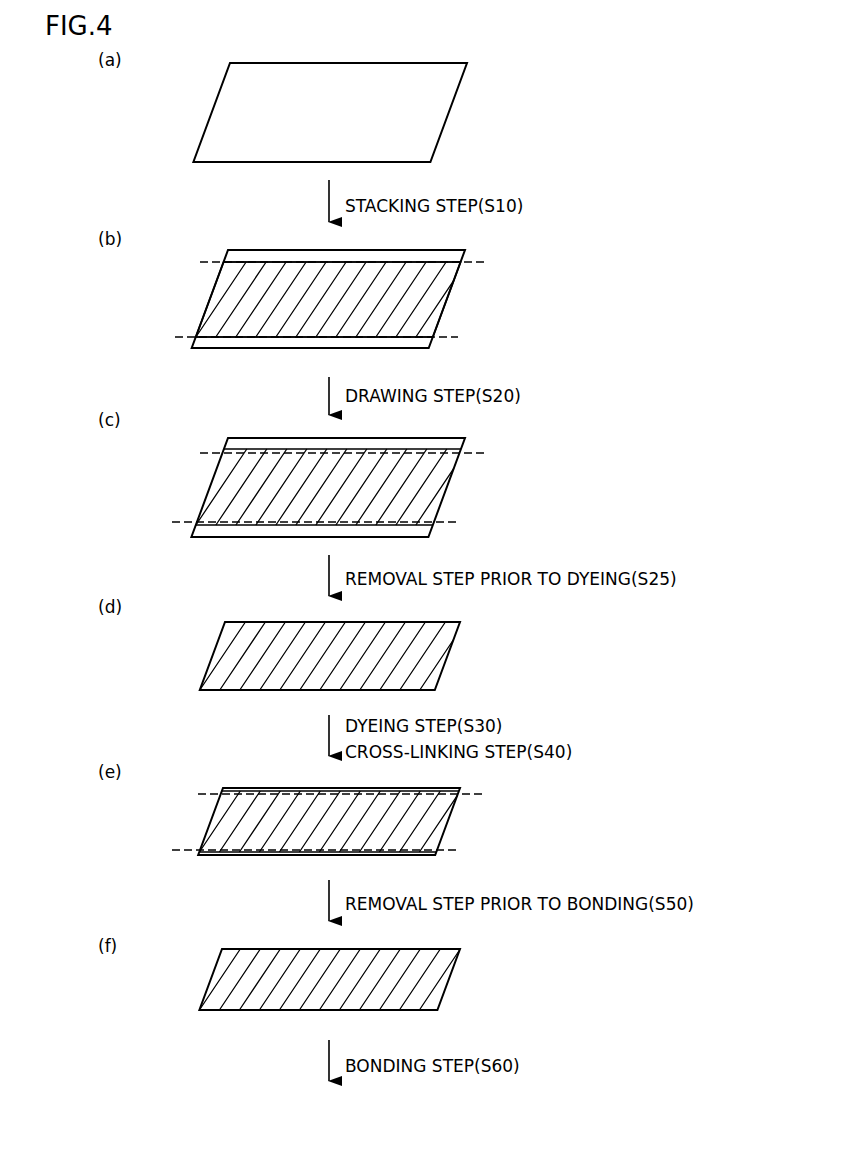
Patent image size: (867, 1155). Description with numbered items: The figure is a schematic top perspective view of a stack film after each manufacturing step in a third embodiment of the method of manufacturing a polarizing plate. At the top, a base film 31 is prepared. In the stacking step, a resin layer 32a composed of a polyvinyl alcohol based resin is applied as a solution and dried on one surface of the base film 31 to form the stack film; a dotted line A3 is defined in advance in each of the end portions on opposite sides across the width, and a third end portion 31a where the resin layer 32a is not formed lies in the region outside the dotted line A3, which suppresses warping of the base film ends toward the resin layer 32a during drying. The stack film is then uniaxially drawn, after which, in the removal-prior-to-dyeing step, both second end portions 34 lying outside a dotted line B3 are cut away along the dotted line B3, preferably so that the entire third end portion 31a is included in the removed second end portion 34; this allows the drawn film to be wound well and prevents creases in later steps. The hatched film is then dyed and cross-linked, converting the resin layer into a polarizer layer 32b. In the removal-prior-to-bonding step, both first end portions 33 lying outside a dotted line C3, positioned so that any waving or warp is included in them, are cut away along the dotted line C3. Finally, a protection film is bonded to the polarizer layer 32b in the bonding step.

The base film 31 is at (443, 93).
The third end portion 31a is at (378, 258).
The resin layer 32a is at (442, 287).
The polarizer layer 32b is at (435, 823).
The first end portion 33 is at (455, 793).
The second end portion 34 is at (458, 451).
The dotted line A3 is at (207, 263).
The dotted line B3 is at (205, 454).
The dotted line C3 is at (204, 794).